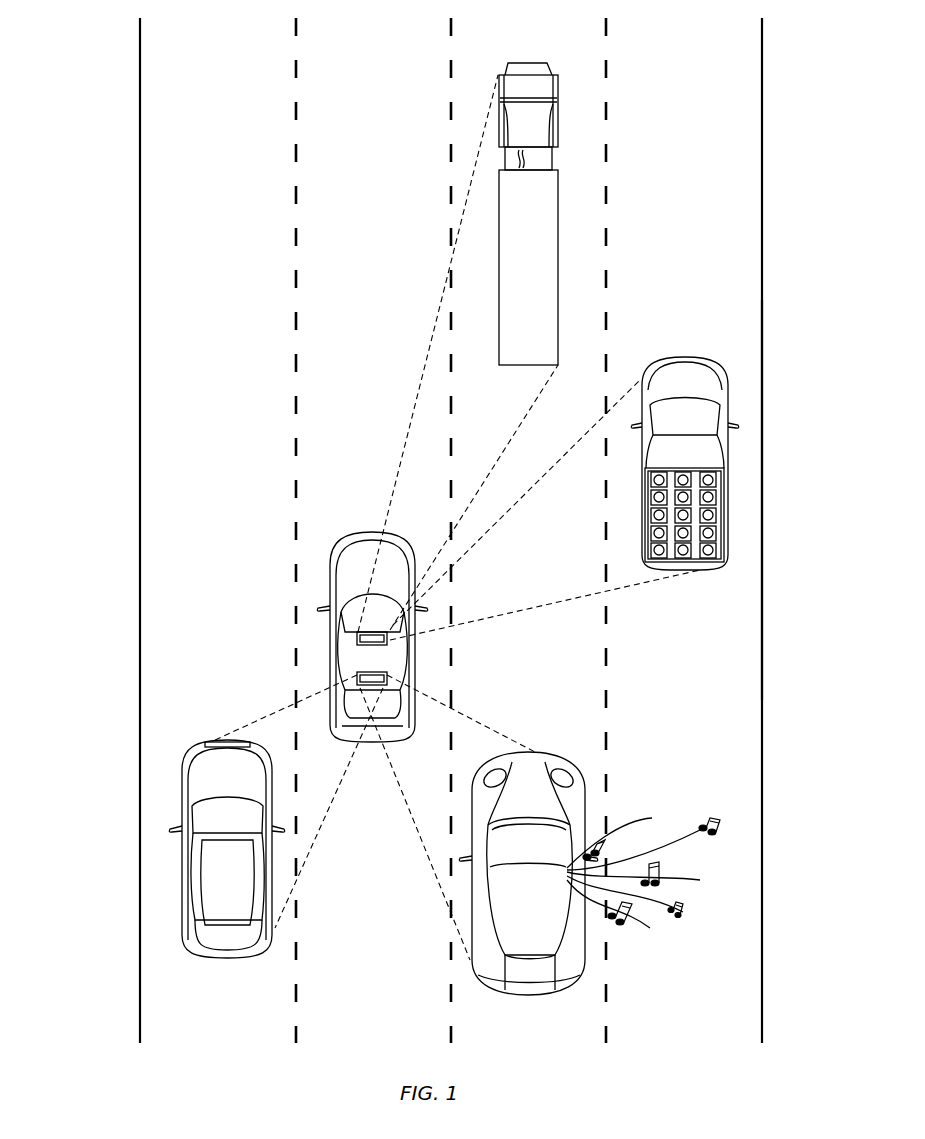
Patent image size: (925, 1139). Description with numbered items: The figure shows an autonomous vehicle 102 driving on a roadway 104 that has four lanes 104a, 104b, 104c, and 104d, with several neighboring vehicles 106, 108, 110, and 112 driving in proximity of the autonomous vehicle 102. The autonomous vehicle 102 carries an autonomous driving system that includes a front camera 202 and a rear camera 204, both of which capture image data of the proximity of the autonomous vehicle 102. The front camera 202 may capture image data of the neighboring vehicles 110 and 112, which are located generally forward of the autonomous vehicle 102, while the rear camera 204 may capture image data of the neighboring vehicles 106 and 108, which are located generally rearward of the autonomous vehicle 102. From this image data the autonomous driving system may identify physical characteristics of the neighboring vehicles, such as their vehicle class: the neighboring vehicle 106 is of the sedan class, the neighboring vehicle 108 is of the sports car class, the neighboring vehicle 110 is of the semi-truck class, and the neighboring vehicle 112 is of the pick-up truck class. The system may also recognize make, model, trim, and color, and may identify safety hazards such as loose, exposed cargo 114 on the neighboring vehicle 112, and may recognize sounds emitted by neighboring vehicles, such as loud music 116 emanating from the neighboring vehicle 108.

The autonomous vehicle 102 is at (370, 634).
The roadway 104 is at (399, 530).
The lane 104a is at (246, 47).
The lane 104b is at (402, 47).
The lane 104c is at (555, 47).
The lane 104d is at (711, 47).
The neighboring vehicle 106 is at (228, 960).
The neighboring vehicle 108 is at (585, 950).
The neighboring vehicle 110 is at (560, 122).
The neighboring vehicle 112 is at (731, 461).
The cargo 114 is at (715, 495).
The music 116 is at (700, 822).
The front camera 202 is at (375, 647).
The rear camera 204 is at (360, 673).